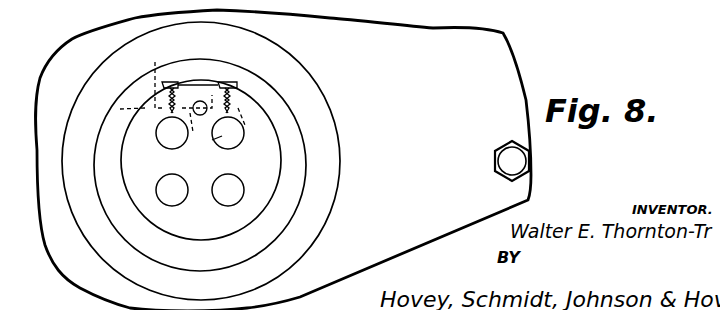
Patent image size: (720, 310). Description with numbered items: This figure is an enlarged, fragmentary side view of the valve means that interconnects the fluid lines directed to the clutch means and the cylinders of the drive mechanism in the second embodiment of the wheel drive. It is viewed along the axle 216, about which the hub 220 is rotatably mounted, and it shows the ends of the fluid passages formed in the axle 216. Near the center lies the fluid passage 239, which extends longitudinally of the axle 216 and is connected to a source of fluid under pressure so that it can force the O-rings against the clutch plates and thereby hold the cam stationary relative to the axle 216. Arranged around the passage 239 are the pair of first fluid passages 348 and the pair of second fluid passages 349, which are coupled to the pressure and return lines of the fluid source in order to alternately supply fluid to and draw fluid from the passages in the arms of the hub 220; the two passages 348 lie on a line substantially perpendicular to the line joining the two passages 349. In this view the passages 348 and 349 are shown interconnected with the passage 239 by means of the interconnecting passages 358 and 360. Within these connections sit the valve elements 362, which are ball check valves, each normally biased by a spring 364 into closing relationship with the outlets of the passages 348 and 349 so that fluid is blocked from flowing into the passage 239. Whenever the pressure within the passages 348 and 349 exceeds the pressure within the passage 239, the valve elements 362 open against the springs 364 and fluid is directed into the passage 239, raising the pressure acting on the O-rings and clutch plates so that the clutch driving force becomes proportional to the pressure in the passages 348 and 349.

The axle 216 is at (263, 185).
The hub 220 is at (500, 70).
The passage 239 is at (200, 101).
The first fluid passages 348 is at (166, 139).
The second fluid passages 349 is at (234, 143).
The interconnecting passage 358 is at (204, 149).
The interconnecting passage 360 is at (232, 70).
The valve elements 362 is at (158, 108).
The springs 364 is at (155, 80).